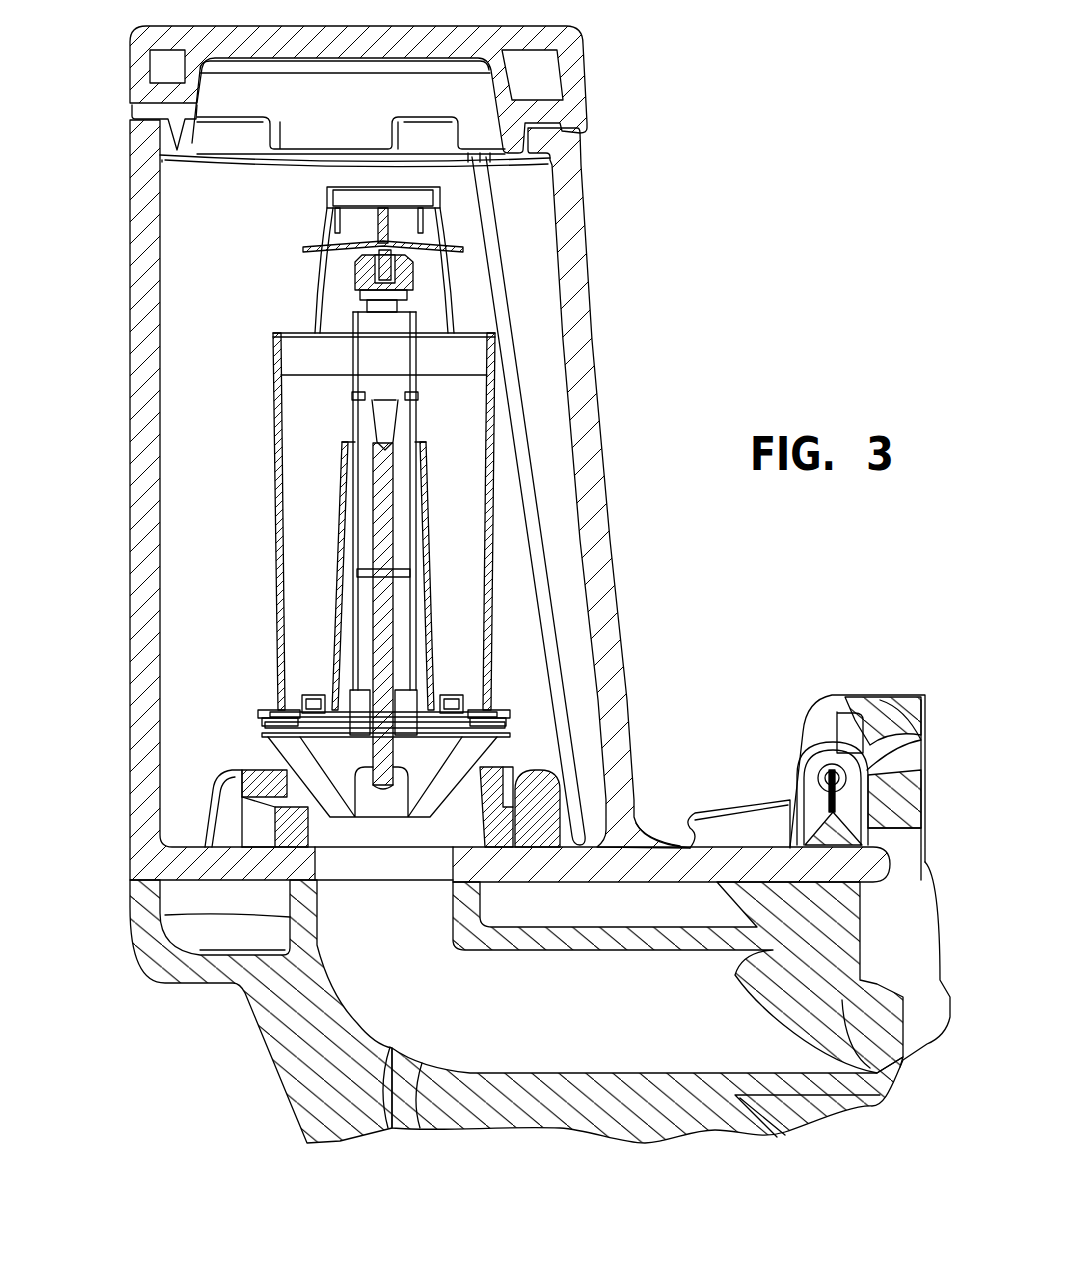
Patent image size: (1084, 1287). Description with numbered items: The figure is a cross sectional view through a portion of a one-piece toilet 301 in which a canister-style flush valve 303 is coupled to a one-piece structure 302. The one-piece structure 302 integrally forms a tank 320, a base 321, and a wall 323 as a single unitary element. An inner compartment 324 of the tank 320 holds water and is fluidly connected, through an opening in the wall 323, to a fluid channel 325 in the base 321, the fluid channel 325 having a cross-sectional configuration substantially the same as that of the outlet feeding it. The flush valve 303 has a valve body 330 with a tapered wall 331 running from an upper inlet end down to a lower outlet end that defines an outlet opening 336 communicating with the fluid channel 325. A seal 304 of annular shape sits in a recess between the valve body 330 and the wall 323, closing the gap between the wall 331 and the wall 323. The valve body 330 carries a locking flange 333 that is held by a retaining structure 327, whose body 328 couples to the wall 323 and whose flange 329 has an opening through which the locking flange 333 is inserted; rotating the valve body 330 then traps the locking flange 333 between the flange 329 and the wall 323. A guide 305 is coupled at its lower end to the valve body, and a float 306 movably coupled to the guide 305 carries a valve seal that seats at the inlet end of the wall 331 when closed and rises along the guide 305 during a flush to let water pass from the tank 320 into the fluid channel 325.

The tank 320 is at (584, 205).
The one-piece toilet 301 is at (511, 642).
The float 306 is at (268, 345).
The inner compartment 324 is at (221, 449).
The guide 305 is at (397, 499).
The flush valve 303 is at (262, 690).
The wall 331 is at (471, 756).
The valve body 330 is at (287, 757).
The outlet opening 336 is at (377, 818).
The retaining structure 327 is at (217, 774).
The seal 304 is at (285, 827).
The locking flange 333 is at (510, 798).
The flange 329 is at (538, 783).
The body 328 is at (562, 817).
The wall 323 is at (552, 876).
The fluid channel 325 is at (399, 912).
The one-piece structure 302 is at (221, 894).
The base 321 is at (264, 1049).